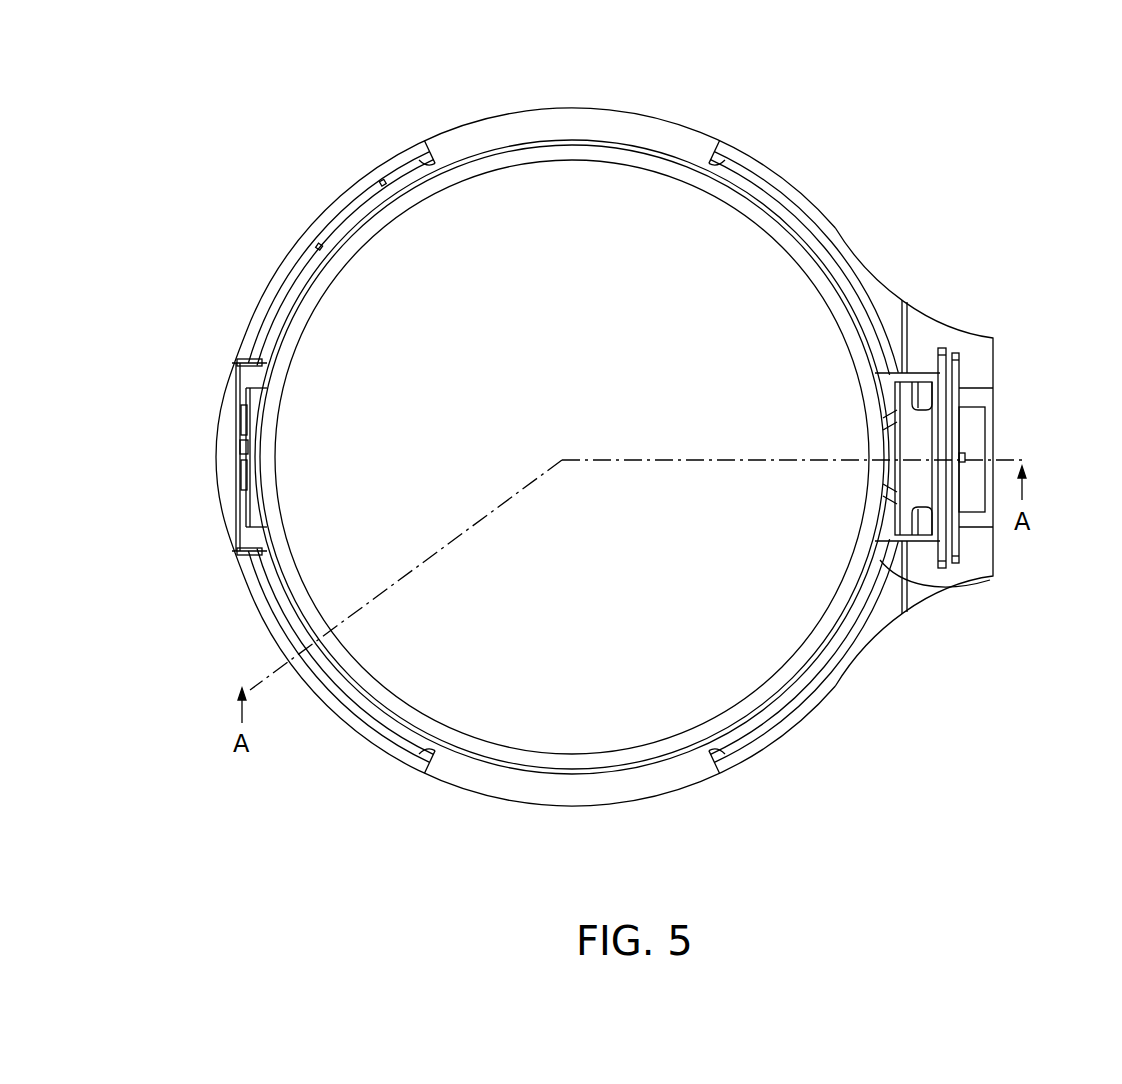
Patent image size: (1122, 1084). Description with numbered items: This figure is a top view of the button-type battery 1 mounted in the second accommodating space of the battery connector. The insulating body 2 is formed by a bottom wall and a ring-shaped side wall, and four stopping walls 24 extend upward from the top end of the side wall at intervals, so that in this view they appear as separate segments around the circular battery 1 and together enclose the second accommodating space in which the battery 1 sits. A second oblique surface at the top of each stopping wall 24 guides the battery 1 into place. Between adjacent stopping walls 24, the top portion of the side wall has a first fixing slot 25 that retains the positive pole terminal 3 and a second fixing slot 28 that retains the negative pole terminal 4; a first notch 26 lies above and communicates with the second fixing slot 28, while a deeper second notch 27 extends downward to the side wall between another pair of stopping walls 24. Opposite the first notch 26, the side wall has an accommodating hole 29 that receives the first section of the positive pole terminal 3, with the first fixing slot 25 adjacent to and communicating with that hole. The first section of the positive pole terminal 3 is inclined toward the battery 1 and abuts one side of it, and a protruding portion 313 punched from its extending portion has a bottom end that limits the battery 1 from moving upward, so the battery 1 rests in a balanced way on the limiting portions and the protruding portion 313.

The battery 1 is at (520, 195).
The insulating body 2 is at (812, 200).
The positive pole terminal 3 is at (920, 443).
The negative pole terminal 4 is at (243, 448).
The stopping walls 24 is at (318, 222).
The first fixing slot 25 is at (955, 360).
The first notch 26 is at (230, 420).
The second notch 27 is at (568, 122).
The second fixing slot 28 is at (237, 364).
The accommodating hole 29 is at (913, 372).
The protruding portion 313 is at (887, 578).